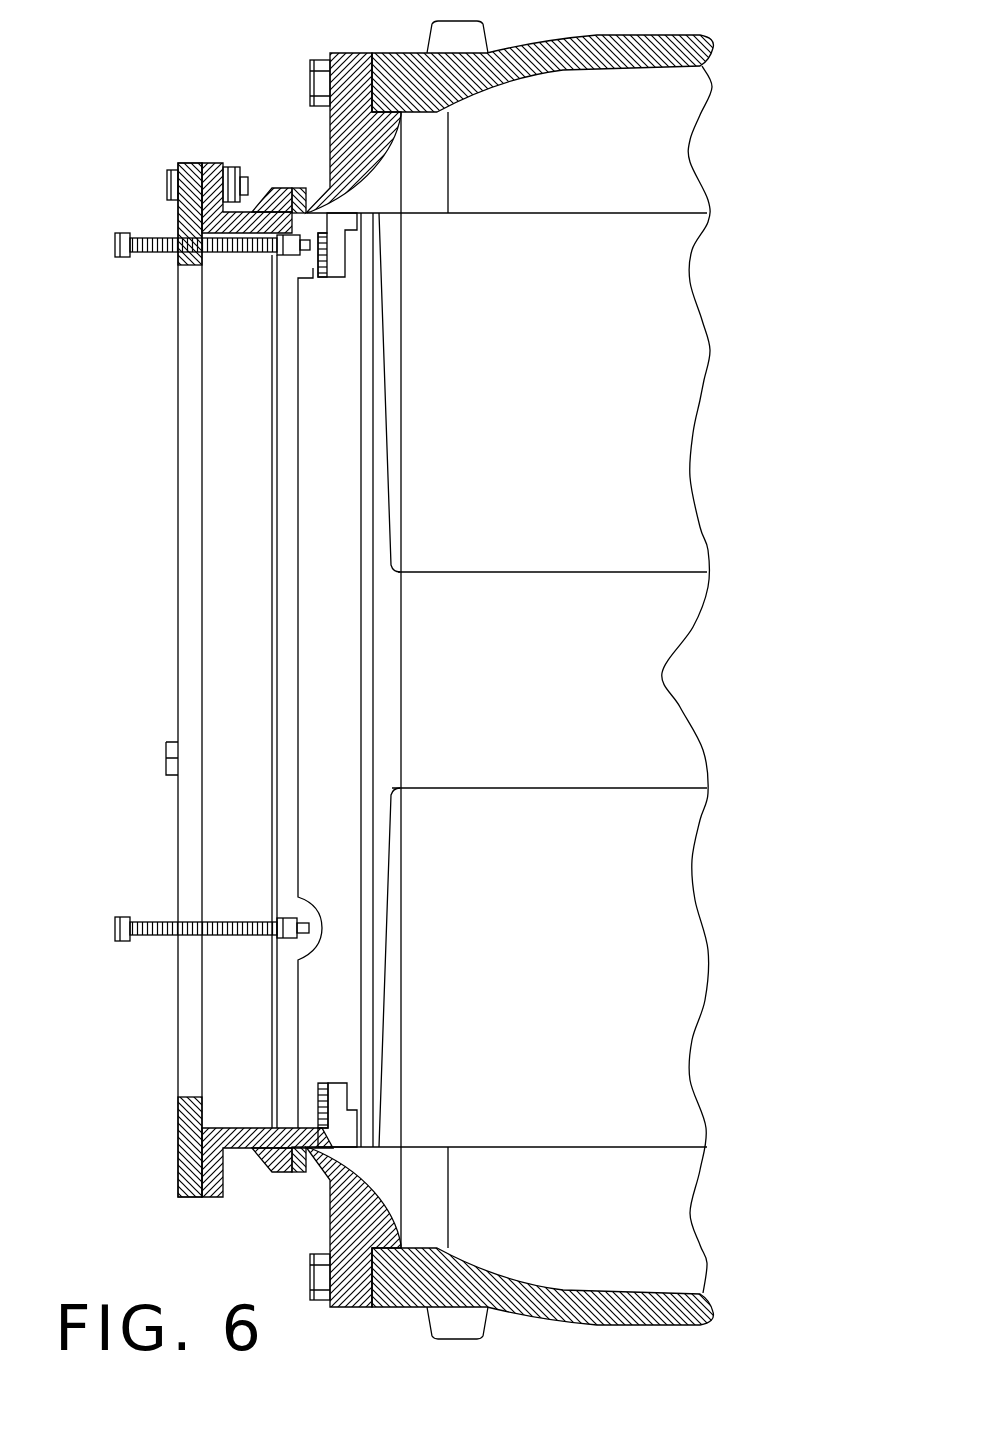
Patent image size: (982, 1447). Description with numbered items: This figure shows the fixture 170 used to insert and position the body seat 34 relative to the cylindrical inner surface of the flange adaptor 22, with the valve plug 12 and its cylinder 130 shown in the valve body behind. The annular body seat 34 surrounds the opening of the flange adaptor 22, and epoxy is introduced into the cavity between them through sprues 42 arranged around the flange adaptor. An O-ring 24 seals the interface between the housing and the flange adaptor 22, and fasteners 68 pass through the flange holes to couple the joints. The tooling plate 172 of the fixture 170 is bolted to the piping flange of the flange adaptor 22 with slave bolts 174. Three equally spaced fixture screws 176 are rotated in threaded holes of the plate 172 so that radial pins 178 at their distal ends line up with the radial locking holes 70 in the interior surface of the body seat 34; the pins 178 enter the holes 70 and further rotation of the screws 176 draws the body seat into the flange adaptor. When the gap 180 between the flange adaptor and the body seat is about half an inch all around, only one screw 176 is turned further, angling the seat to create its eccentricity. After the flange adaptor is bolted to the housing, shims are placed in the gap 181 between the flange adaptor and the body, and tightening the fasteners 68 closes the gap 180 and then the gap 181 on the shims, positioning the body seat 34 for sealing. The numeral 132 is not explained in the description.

The valve plug 12 is at (610, 1166).
The flange adaptor 22 is at (261, 1166).
The O-ring 24 is at (375, 105).
The body seat 34 is at (300, 1124).
The sprues 42 is at (307, 187).
The fasteners 68 is at (310, 79).
The radial locking holes 70 is at (287, 192).
The cylinder 130 is at (523, 212).
The pipe bore line 132 is at (481, 572).
The fixture 170 is at (196, 650).
The tooling plate 172 is at (179, 1150).
The slave bolts 174 is at (166, 188).
The fixture screws 176 is at (121, 259).
The radial pins 178 is at (244, 257).
The gap 180 is at (272, 476).
The gap 181 is at (370, 42).